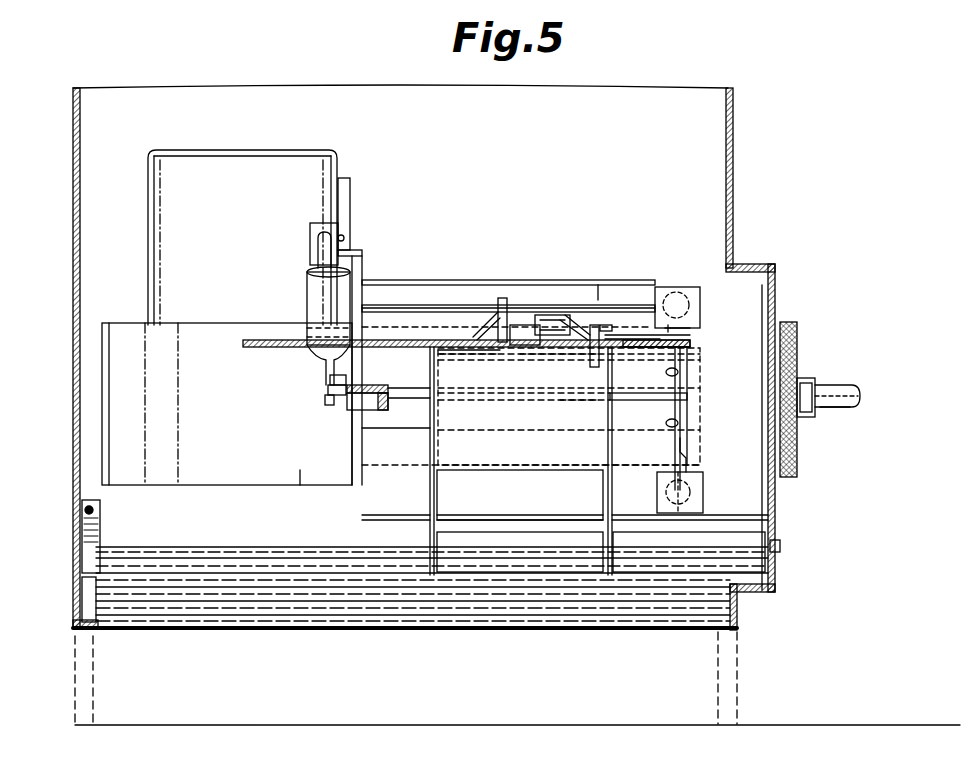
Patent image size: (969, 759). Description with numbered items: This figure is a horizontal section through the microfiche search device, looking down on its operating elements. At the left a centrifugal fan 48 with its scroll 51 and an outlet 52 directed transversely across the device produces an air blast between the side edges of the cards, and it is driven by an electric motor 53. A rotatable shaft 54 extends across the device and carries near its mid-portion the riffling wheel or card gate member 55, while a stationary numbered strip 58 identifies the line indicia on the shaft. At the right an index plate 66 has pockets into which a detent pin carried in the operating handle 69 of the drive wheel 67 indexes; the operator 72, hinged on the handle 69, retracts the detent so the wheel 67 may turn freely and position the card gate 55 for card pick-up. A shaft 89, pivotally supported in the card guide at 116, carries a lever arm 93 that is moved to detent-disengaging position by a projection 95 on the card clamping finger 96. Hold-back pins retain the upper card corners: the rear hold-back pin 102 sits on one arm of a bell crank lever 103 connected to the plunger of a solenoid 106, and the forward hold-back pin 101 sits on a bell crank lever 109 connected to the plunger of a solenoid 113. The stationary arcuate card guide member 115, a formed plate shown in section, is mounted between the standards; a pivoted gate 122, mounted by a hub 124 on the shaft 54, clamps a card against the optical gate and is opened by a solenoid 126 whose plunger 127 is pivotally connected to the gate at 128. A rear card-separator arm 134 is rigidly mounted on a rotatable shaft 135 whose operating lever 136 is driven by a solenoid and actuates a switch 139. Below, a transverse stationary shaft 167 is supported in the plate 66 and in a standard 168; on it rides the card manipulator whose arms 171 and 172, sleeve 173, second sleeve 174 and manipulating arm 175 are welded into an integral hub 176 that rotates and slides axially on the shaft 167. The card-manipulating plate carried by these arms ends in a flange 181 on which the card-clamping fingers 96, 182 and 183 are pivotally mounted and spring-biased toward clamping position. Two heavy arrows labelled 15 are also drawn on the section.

The section line indicator 15 is at (596, 293).
The centrifugal fan 48 is at (209, 497).
The scroll 51 is at (206, 432).
The outlet 52 is at (298, 477).
The electric motor 53 is at (208, 150).
The rotatable shaft 54 is at (395, 400).
The riffling wheel or card gate member 55 is at (490, 411).
The numbered strip 58 is at (690, 393).
The index plate 66 is at (778, 532).
The drive wheel 67 is at (800, 328).
The operating handle 69 is at (830, 388).
The operator 72 is at (830, 408).
The shaft 89 is at (672, 326).
The lever arm 93 is at (598, 285).
The projection 95 is at (616, 360).
The card clamping finger 96 is at (580, 410).
The forward hold-back pin 101 is at (685, 423).
The rear hold-back pin 102 is at (680, 372).
The bell crank lever 103 is at (690, 352).
The solenoid 106 is at (673, 287).
The bell crank lever 109 is at (690, 453).
The solenoid 113 is at (704, 494).
The arcuate card guide member 115 is at (254, 348).
The pivotal support 116 is at (618, 325).
The pivoted gate 122 is at (333, 388).
The hub 124 is at (378, 386).
The solenoid 126 is at (312, 291).
The plunger 127 is at (330, 378).
The pivotal connection 128 is at (325, 405).
The rear card-separator arm 134 is at (520, 310).
The rotatable shaft 135 is at (385, 300).
The operating lever 136 is at (318, 262).
The switch 139 is at (320, 223).
The transverse stationary shaft 167 is at (215, 548).
The standard 168 is at (82, 538).
The arm 171 is at (447, 488).
The arm 172 is at (603, 488).
The sleeve 173 is at (532, 553).
The second sleeve 174 is at (696, 553).
The manipulating arm 175 is at (782, 546).
The hub 176 is at (518, 588).
The flange 181 is at (440, 346).
The card-clamping finger 182 is at (520, 376).
The card-clamping finger 183 is at (450, 376).